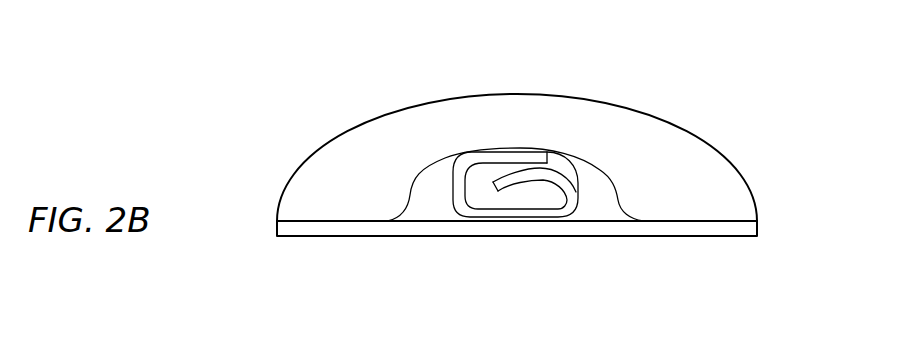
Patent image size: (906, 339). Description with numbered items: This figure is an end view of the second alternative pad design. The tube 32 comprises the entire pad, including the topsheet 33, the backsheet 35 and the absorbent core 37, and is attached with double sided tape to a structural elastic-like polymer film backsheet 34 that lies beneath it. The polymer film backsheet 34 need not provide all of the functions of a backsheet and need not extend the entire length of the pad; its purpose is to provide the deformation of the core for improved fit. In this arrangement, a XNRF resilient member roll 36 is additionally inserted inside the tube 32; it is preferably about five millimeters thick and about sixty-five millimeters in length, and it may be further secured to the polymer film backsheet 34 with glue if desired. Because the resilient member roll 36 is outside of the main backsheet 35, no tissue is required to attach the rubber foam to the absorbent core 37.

The tube 32 is at (673, 137).
The topsheet 33 is at (587, 99).
The structural elastic-like polymer film backsheet 34 is at (703, 237).
The backsheet 35 is at (607, 201).
The XNRF resilient member roll 36 is at (527, 210).
The absorbent core 37 is at (713, 182).